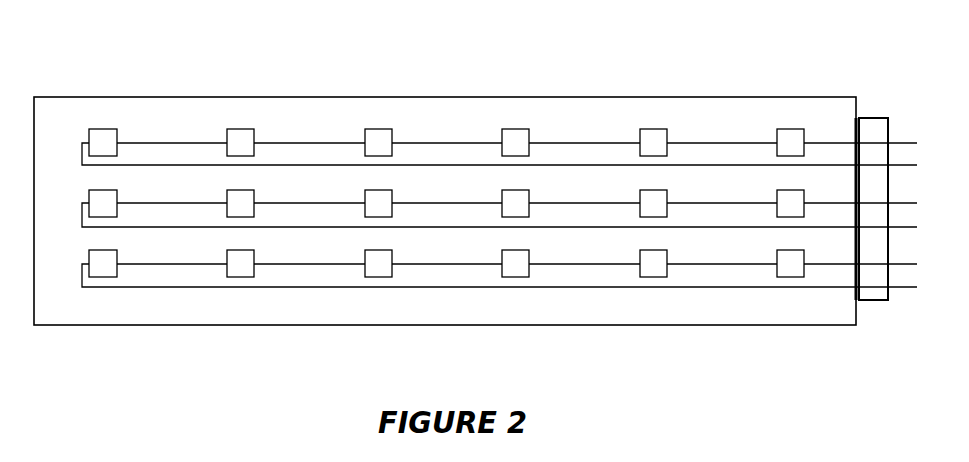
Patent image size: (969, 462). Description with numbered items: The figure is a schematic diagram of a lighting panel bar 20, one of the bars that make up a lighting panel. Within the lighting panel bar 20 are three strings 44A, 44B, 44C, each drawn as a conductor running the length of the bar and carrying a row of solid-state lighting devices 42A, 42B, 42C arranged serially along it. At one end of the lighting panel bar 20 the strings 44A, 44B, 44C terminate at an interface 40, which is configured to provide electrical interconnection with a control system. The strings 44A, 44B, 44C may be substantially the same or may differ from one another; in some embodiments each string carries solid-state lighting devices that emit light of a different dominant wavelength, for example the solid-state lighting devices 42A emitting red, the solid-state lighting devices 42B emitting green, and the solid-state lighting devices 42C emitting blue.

The lighting panel bar 20 is at (53, 325).
The interface 40 is at (874, 116).
The solid-state lighting devices 42A is at (238, 143).
The solid-state lighting devices 42B is at (515, 205).
The solid-state lighting devices 42C is at (103, 265).
The string 44A is at (572, 142).
The string 44B is at (413, 203).
The string 44C is at (408, 264).